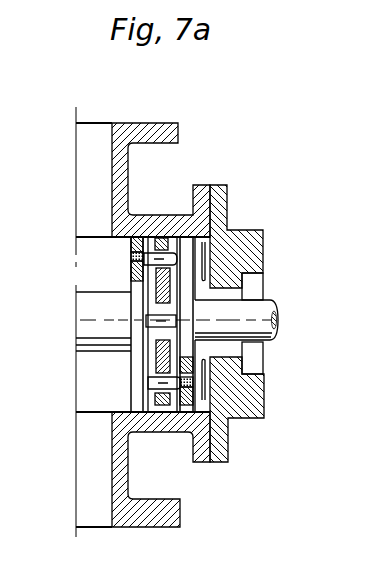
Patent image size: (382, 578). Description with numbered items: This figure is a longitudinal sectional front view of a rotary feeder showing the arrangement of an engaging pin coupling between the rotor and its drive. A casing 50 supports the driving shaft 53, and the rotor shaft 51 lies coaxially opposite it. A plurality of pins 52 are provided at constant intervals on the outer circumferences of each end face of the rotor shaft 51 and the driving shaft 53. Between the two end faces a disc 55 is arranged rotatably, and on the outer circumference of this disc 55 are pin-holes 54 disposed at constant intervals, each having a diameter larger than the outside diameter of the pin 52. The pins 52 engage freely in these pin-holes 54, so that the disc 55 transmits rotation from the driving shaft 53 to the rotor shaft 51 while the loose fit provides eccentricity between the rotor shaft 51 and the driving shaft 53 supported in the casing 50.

The casing 50 is at (228, 210).
The rotor shaft 51 is at (90, 355).
The pins 52 is at (150, 237).
The driving shaft 53 is at (230, 298).
The pin-holes 54 is at (163, 243).
The disc 55 is at (163, 358).